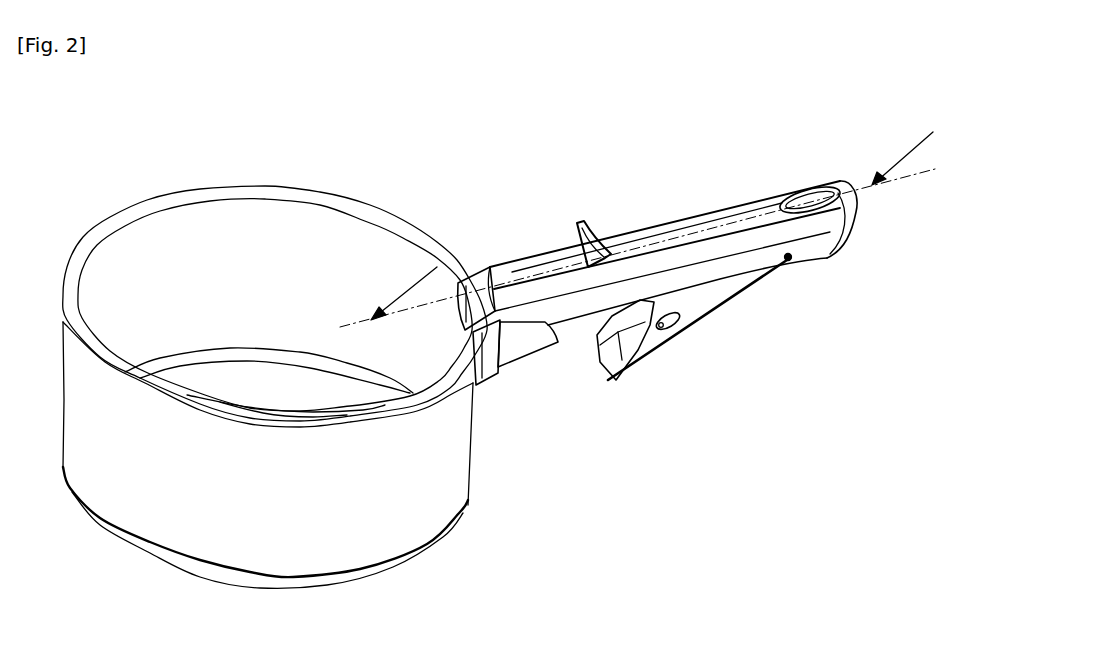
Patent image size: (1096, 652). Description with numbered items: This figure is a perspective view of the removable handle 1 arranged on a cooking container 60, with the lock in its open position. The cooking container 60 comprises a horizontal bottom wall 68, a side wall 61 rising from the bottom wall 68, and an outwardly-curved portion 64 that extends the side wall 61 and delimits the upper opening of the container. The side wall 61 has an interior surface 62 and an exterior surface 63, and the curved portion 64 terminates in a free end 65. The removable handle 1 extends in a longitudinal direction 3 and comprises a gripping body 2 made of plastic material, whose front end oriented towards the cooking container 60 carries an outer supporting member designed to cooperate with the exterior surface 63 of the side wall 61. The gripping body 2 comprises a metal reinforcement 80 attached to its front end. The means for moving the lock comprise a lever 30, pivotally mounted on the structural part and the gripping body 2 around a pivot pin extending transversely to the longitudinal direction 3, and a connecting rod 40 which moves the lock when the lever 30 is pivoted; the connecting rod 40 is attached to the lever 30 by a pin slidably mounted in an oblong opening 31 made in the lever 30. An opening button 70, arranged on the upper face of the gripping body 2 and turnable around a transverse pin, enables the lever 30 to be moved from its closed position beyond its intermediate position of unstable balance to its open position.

The removable handle 1 is at (640, 157).
The gripping body 2 is at (708, 268).
The longitudinal direction 3 is at (742, 220).
The lever 30 is at (641, 343).
The oblong opening 31 is at (688, 333).
The connecting rod 40 is at (674, 335).
The cooking container 60 is at (185, 292).
The side wall 61 is at (472, 453).
The interior surface 62 is at (318, 240).
The exterior surface 63 is at (477, 400).
The outwardly-curved portion 64 is at (72, 278).
The free end 65 is at (470, 267).
The bottom wall 68 is at (280, 587).
The opening button 70 is at (595, 235).
The metal reinforcement 80 is at (518, 347).